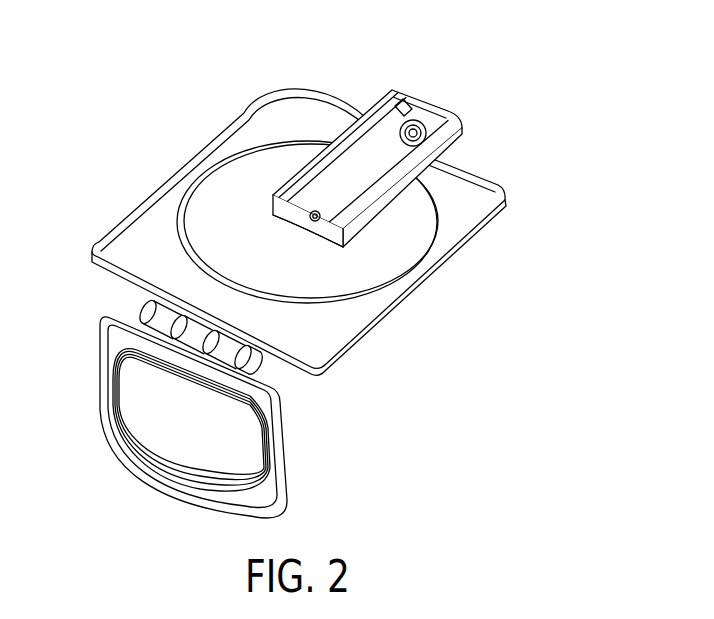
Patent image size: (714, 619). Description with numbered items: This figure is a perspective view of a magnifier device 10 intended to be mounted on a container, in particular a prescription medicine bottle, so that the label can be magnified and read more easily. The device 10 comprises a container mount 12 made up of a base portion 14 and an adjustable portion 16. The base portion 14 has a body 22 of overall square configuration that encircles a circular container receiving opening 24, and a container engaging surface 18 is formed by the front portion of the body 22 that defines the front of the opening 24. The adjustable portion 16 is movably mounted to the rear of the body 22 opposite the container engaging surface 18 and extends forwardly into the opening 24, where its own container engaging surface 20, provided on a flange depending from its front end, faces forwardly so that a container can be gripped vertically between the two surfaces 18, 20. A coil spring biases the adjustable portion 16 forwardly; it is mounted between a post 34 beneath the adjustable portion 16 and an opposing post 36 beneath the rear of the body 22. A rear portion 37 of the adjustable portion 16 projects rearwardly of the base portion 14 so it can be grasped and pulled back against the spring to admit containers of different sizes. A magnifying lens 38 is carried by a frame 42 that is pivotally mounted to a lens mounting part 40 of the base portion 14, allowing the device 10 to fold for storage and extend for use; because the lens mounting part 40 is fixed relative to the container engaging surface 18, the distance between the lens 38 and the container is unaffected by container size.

The magnifier device 10 is at (289, 265).
The container mount 12 is at (304, 190).
The base portion 14 is at (453, 240).
The adjustable portion 16 is at (377, 167).
The container engaging surface 18 is at (216, 272).
The container engaging surface 20 is at (284, 212).
The body 22 is at (488, 187).
The container receiving opening 24 is at (230, 177).
The post 34 is at (313, 220).
The post 36 is at (410, 130).
The rear portion 37 is at (413, 96).
The magnifying lens 38 is at (190, 463).
The lens mounting part 40 is at (155, 311).
The frame 42 is at (225, 420).